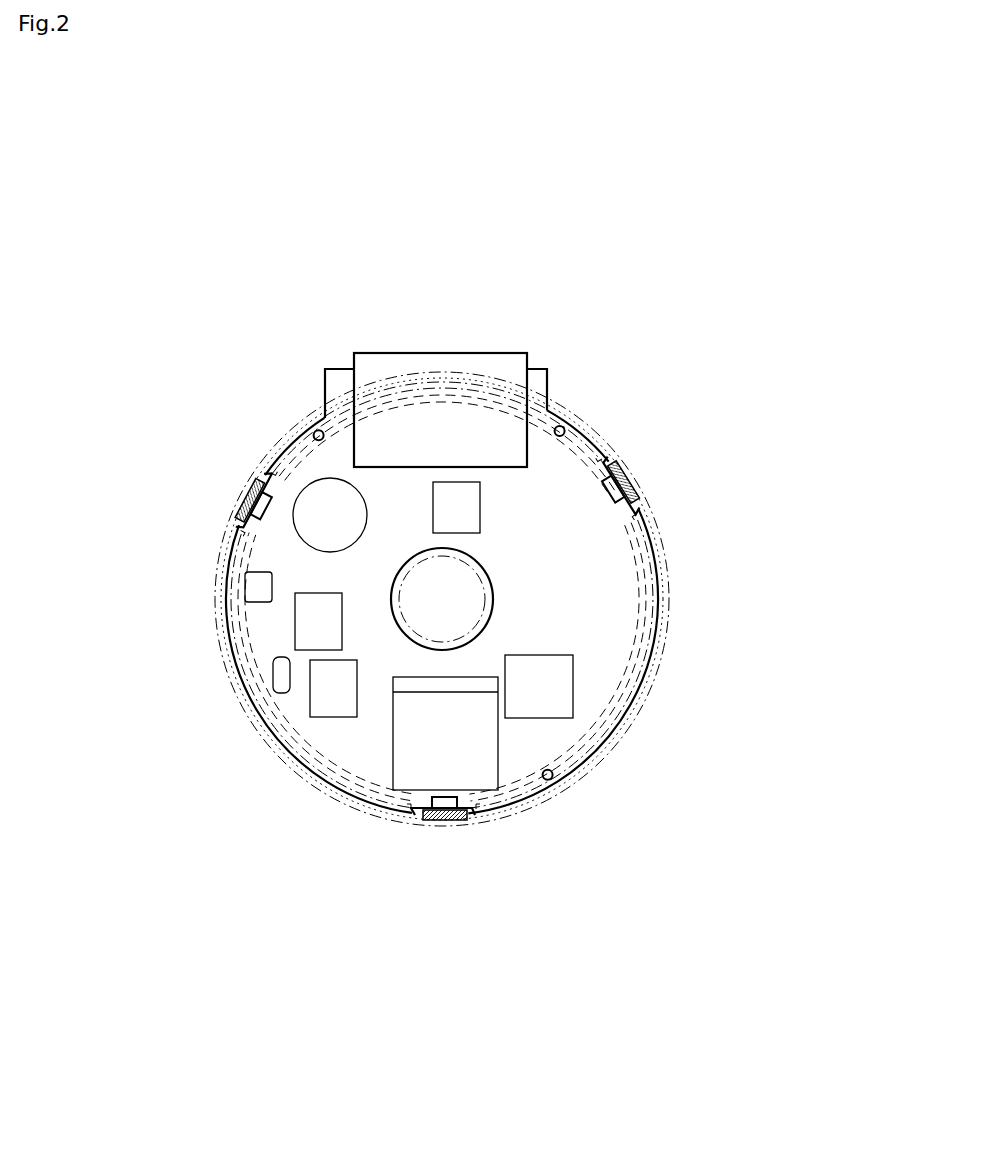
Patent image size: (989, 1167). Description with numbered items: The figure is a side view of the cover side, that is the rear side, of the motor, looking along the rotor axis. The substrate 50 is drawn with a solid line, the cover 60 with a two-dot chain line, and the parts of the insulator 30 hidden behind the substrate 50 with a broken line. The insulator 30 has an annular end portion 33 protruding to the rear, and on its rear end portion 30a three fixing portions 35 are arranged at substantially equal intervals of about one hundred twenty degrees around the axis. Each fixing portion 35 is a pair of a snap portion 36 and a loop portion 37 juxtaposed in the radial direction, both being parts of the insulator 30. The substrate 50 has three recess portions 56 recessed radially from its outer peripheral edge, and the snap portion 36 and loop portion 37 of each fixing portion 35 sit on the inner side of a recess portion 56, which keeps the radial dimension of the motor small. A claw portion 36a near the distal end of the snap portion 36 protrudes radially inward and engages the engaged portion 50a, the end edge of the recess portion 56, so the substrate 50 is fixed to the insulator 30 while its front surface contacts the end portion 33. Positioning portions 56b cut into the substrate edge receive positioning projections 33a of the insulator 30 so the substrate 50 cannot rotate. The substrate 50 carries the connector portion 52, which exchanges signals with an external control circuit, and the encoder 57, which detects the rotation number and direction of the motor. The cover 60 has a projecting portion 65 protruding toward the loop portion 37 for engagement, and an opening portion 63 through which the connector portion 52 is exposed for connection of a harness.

The insulator 30 is at (442, 526).
The end portion 33 is at (444, 385).
The rear end portion 30a is at (673, 600).
The fixing portion 35 is at (423, 707).
The snap portion 36 is at (422, 906).
The claw portion 36a is at (437, 822).
The loop portion 37 is at (450, 906).
The substrate 50 is at (456, 302).
The engaged portion 50a is at (423, 718).
The connector portion 52 is at (490, 353).
The recess portion 56 is at (608, 500).
The positioning portion 56b is at (477, 700).
The positioning projection 33a is at (551, 781).
The encoder 57 is at (482, 718).
The cover 60 is at (676, 562).
The opening portion 63 is at (548, 368).
The projecting portion 65 is at (605, 462).